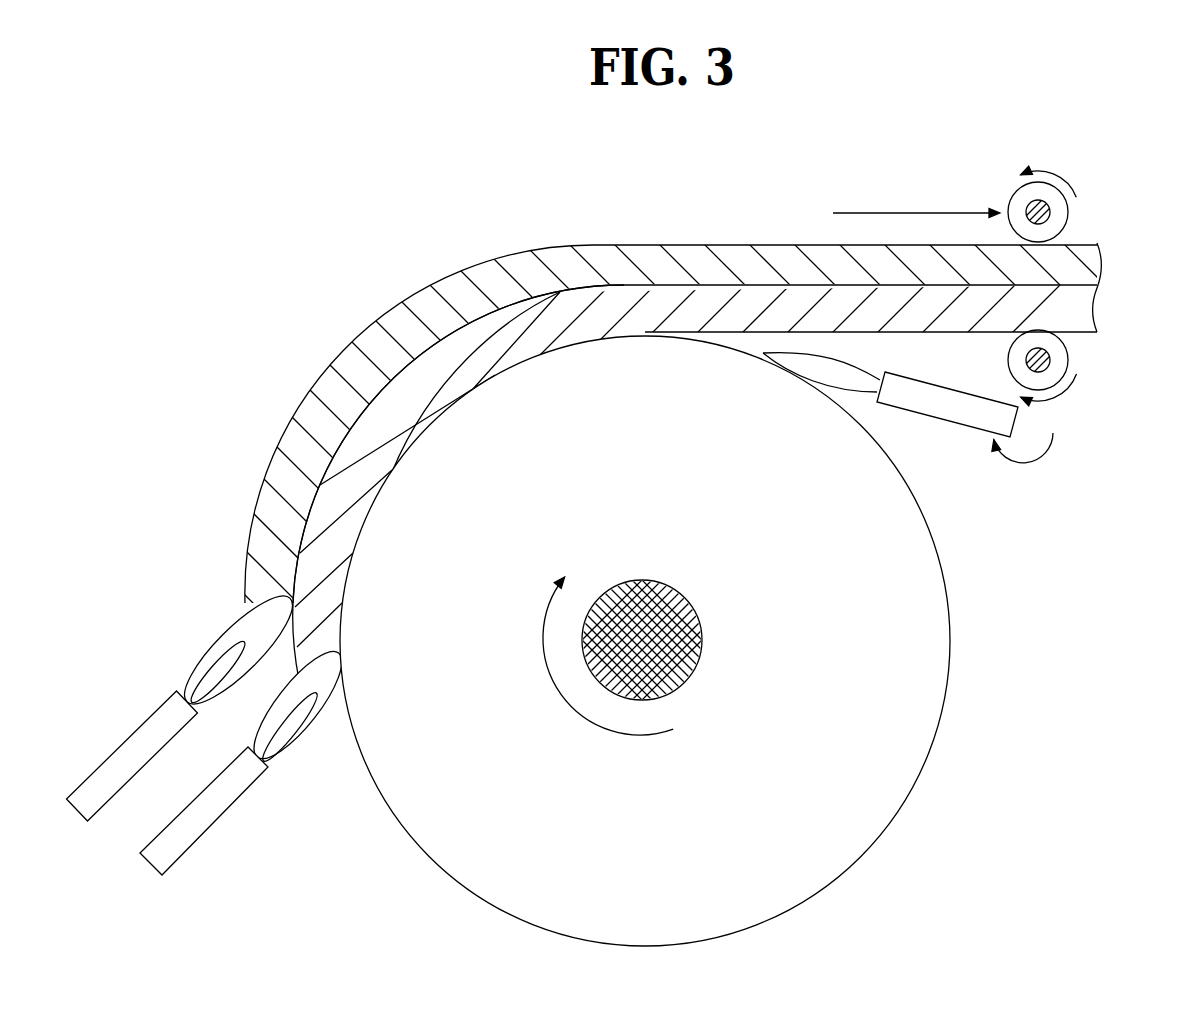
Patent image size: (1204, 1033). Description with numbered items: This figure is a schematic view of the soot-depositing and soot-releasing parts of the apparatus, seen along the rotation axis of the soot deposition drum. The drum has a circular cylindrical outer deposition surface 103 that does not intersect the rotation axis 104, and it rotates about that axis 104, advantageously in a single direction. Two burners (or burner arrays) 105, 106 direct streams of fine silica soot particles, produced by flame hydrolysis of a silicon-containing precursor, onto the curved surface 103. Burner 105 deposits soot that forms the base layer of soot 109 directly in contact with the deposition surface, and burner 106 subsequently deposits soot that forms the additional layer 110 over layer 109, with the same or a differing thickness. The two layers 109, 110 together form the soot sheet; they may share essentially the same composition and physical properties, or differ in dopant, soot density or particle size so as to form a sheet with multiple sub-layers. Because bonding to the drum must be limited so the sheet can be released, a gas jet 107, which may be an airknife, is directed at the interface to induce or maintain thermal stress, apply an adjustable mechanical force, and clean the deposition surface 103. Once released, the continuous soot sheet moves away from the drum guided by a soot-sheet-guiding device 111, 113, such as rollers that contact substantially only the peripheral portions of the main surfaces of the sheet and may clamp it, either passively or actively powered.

The curved deposition surface 103 is at (941, 714).
The rotation axis 104 is at (674, 638).
The burner 105 is at (242, 795).
The burner 106 is at (167, 746).
The gas jet 107 is at (919, 408).
The base layer of soot 109 is at (1108, 312).
The additional soot layer 110 is at (322, 378).
The soot-sheet-guiding device 111 is at (1074, 212).
The soot-sheet-guiding device 113 is at (1074, 360).